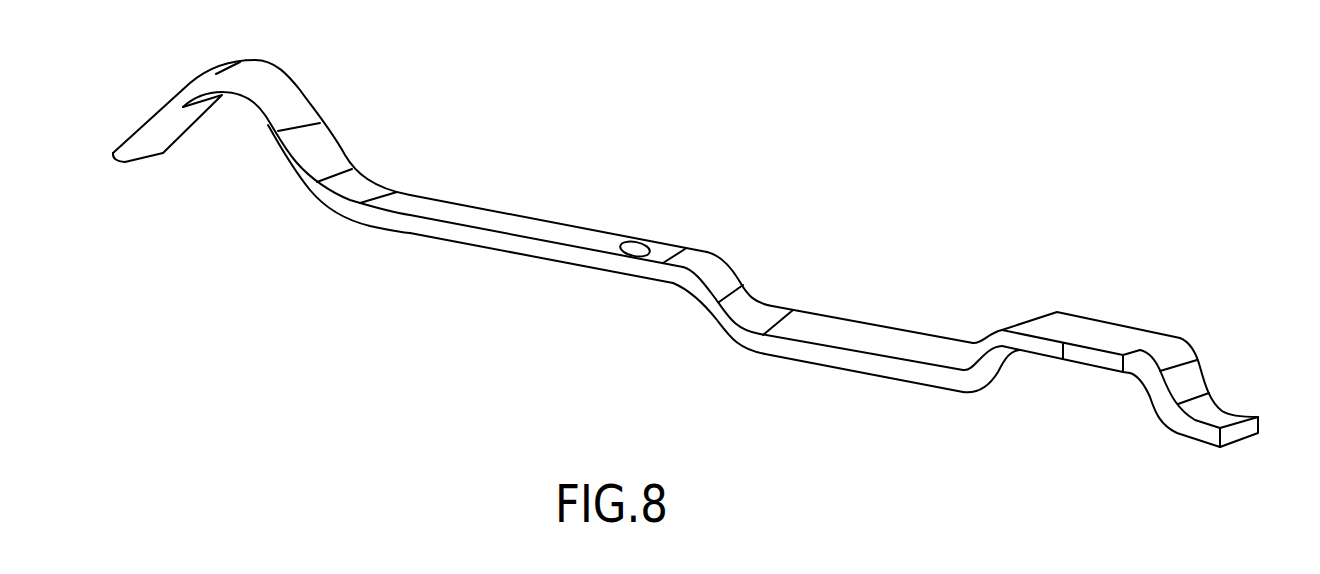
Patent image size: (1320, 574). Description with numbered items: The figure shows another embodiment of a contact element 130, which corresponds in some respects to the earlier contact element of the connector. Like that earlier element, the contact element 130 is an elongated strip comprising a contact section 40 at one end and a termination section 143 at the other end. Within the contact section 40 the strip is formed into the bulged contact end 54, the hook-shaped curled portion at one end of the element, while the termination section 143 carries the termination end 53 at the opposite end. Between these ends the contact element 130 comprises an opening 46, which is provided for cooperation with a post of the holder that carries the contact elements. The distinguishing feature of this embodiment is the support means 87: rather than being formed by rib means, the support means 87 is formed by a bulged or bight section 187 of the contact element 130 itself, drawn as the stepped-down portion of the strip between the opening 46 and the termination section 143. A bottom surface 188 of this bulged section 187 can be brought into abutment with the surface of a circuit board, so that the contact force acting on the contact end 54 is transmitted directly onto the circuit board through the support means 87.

The contact element 130 is at (599, 185).
The bulged contact end 54 is at (289, 91).
The contact section 40 is at (350, 287).
The opening 46 is at (632, 250).
The bottom surface 188 is at (829, 368).
The bulged or bight section 187 is at (980, 450).
The support means 87 is at (884, 392).
The termination end 53 is at (1203, 443).
The termination section 143 is at (1208, 492).